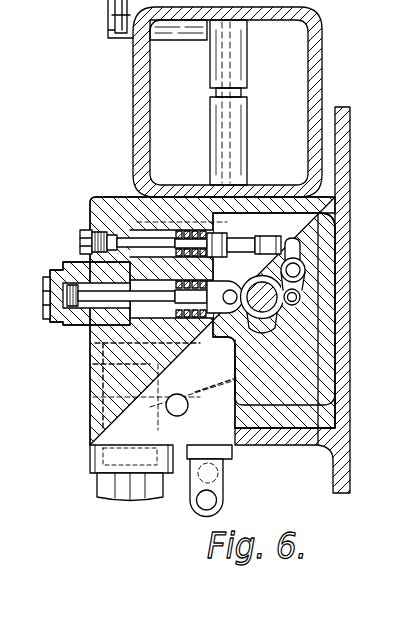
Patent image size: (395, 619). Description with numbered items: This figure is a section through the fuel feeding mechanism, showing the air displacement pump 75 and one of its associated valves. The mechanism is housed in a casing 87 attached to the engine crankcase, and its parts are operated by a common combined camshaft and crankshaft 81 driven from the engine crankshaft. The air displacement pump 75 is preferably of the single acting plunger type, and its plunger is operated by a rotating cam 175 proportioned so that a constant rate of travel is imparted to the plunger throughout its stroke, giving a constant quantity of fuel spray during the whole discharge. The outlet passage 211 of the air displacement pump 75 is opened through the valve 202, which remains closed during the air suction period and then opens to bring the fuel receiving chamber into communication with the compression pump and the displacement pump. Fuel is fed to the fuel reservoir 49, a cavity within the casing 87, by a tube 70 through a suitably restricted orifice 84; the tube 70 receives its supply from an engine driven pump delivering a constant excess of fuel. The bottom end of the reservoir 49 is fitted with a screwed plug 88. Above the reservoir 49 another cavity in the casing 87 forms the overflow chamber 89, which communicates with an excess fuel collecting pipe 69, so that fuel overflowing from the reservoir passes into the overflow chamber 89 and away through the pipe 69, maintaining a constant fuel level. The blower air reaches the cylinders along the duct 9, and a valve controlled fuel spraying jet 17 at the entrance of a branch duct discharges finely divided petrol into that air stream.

The fuel spraying jet 17 is at (248, 63).
The valve 202 is at (162, 240).
The outlet passage 211 is at (44, 281).
The air displacement pump 75 is at (93, 262).
The rotating cam 175 is at (273, 321).
The combined camshaft and crankshaft 81 is at (276, 311).
The casing 87 is at (93, 340).
The overflow chamber 89 is at (93, 363).
The duct 9 is at (90, 384).
The restricted orifice 84 is at (227, 377).
The tube 70 is at (188, 402).
The fuel reservoir 49 is at (107, 418).
The excess fuel collecting pipe 69 is at (224, 470).
The screwed plug 88 is at (100, 493).